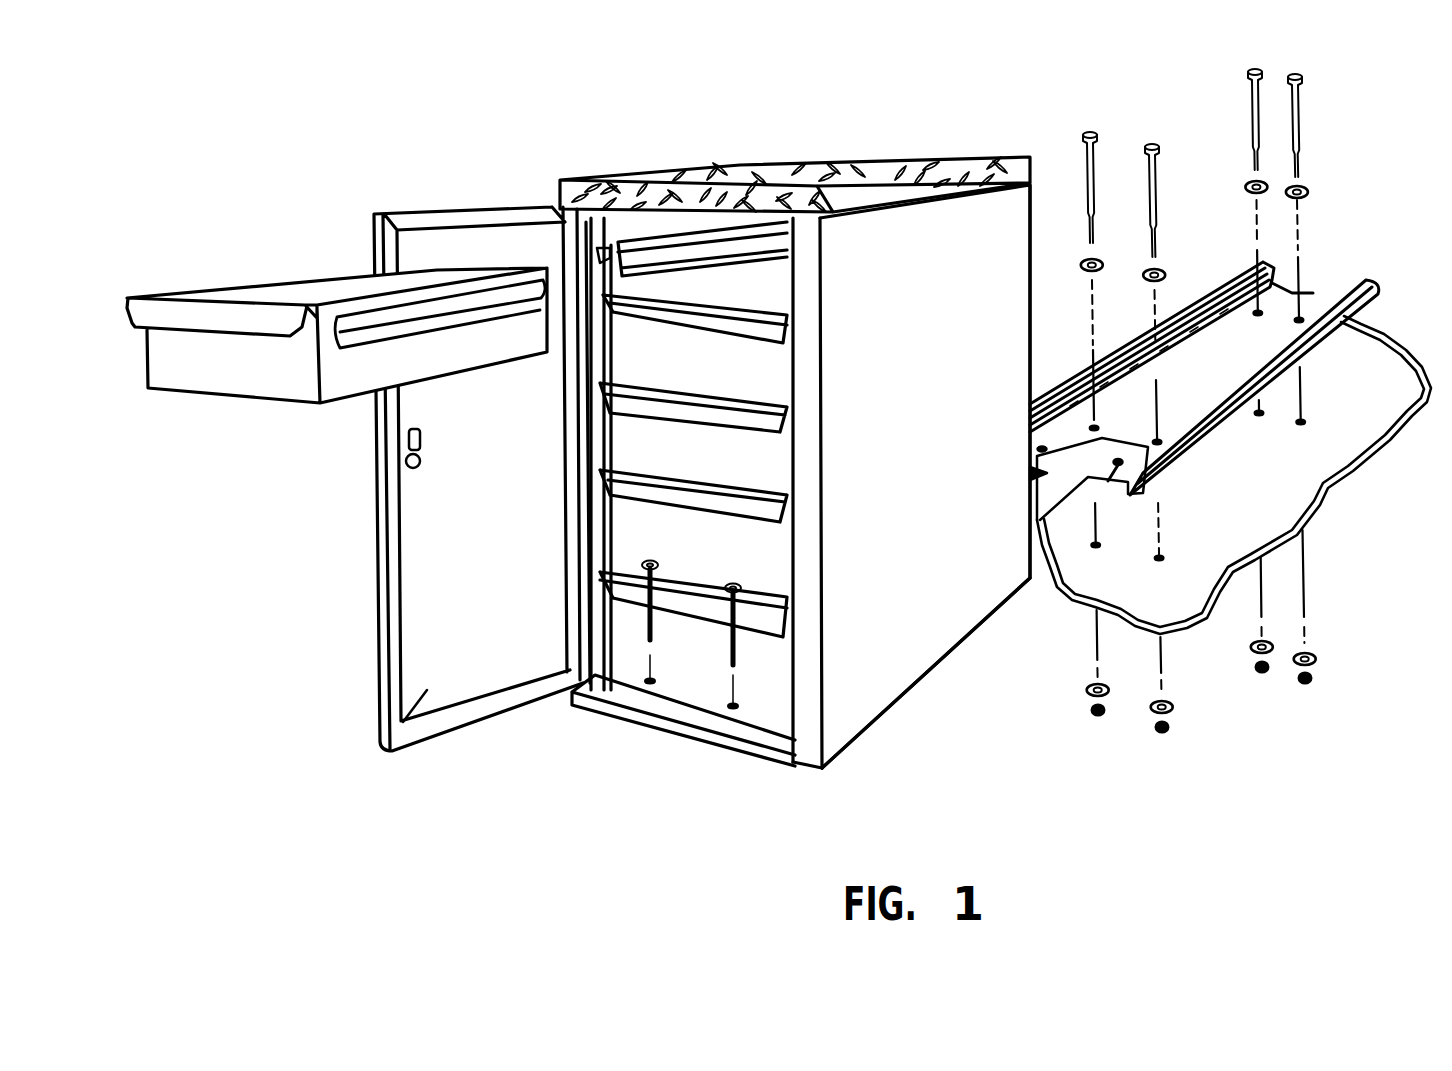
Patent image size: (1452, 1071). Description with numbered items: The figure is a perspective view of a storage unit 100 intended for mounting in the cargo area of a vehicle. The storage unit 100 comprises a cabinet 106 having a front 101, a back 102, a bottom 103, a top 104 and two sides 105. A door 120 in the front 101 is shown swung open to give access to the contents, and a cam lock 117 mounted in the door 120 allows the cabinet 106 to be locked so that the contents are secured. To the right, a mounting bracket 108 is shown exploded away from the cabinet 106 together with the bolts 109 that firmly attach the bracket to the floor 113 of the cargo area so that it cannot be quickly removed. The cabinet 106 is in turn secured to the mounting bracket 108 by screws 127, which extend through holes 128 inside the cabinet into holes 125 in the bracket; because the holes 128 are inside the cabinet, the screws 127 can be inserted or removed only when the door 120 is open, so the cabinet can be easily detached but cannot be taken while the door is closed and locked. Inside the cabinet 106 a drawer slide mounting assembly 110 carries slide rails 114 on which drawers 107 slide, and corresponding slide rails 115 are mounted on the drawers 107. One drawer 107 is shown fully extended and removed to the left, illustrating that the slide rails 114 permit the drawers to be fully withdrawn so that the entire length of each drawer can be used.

The storage unit 100 is at (783, 160).
The front 101 is at (805, 753).
The back 102 is at (1030, 233).
The bottom 103 is at (875, 727).
The top 104 is at (853, 170).
The sides 105 is at (963, 625).
The cabinet 106 is at (460, 620).
The drawers 107 is at (237, 368).
The mounting bracket 108 is at (1348, 330).
The bolts 109 is at (1247, 103).
The drawer slide mounting assembly 110 is at (607, 258).
The floor 113 is at (1287, 457).
The slide rails 114 is at (673, 257).
The slide rails 115 is at (390, 322).
The cam lock 117 is at (405, 471).
The door 120 is at (398, 737).
The holes 125 is at (1113, 467).
The screws 127 is at (727, 630).
The holes 128 is at (733, 708).